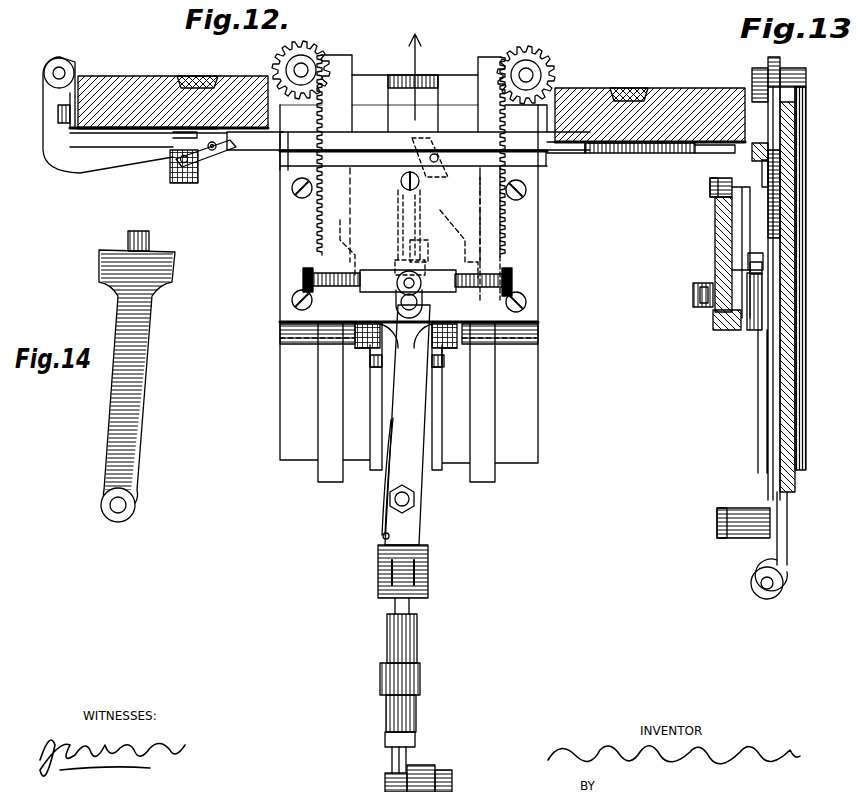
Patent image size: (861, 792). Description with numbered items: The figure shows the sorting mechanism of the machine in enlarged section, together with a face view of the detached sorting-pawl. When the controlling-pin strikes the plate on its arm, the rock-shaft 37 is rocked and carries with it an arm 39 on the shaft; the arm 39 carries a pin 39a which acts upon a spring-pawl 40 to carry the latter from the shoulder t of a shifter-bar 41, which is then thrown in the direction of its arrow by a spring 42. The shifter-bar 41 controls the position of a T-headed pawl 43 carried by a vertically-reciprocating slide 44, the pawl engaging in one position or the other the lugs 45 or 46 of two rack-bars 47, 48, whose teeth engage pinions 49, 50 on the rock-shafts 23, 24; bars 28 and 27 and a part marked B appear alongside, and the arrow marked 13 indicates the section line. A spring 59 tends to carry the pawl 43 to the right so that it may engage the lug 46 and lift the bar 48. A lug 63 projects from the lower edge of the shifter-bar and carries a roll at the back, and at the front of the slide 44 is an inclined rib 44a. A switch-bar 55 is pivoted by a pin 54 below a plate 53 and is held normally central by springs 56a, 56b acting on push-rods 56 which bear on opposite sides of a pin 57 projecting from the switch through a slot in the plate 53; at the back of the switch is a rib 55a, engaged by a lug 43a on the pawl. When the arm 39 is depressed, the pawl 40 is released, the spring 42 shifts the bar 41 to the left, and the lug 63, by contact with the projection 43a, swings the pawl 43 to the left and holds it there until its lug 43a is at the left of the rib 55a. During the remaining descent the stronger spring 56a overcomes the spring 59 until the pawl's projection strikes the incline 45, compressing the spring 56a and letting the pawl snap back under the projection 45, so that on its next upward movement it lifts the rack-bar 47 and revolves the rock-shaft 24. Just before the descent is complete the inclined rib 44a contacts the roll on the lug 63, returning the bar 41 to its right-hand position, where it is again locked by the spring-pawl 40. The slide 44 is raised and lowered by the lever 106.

In FIG. 12, the direction arrow / lead screw 13 is at (415, 73).
In FIG. 12, the rock-shaft 23 is at (541, 75).
In FIG. 12, the rock-shaft 24 is at (220, 67).
In FIG. 12, the right bar 27 is at (636, 88).
In FIG. 12, the left bar 28 is at (196, 76).
In FIG. 12, the rock-shaft 37 is at (55, 59).
In FIG. 12, the arm 39 is at (135, 115).
In FIG. 12, the pin 39a is at (224, 148).
In FIG. 12, the spring-pawl 40 is at (200, 176).
In FIG. 13, the shifter-bar 41 is at (755, 161).
In FIG. 12, the spring 42 is at (618, 171).
In FIG. 12, the T-headed pawl 43 is at (407, 425).
In FIG. 13, the T-headed pawl 43 is at (772, 439).
In FIG. 14, the T-headed pawl 43 is at (138, 401).
In FIG. 12, the lug 43a is at (428, 252).
In FIG. 13, the lug 43a is at (748, 267).
In FIG. 14, the lug 43a is at (128, 240).
In FIG. 12, the slide 44 is at (428, 547).
In FIG. 13, the slide 44 is at (776, 399).
In FIG. 12, the inclined rib 44a is at (396, 202).
In FIG. 13, the inclined rib 44a is at (768, 213).
In FIG. 12, the lug 45 is at (360, 256).
In FIG. 12, the lug 46 is at (460, 246).
In FIG. 12, the rack-bar 47 is at (337, 60).
In FIG. 13, the rack-bar 47 is at (758, 68).
In FIG. 12, the rack-bar 48 is at (486, 58).
In FIG. 12, the pinion 49 is at (301, 62).
In FIG. 13, the pinion 49 is at (782, 60).
In FIG. 12, the pinion 50 is at (540, 62).
In FIG. 12, the plate 53 is at (504, 234).
In FIG. 13, the plate 53 is at (750, 209).
In FIG. 12, the pin 54 is at (421, 183).
In FIG. 13, the pin 54 is at (710, 188).
In FIG. 12, the switch-bar 55 is at (420, 214).
In FIG. 13, the switch-bar 55 is at (755, 239).
In FIG. 12, the rib 55a is at (404, 238).
In FIG. 13, the rib 55a is at (746, 253).
In FIG. 12, the push-rods 56 is at (455, 292).
In FIG. 12, the spring 56a is at (498, 278).
In FIG. 12, the spring 56b is at (318, 275).
In FIG. 12, the pin 57 is at (421, 277).
In FIG. 13, the pin 57 is at (700, 285).
In FIG. 12, the spring 59 is at (388, 472).
In FIG. 12, the lug 63 is at (438, 152).
In FIG. 13, the lug 63 is at (770, 145).
In FIG. 12, the lever 106 is at (433, 769).
In FIG. 12, the bar B is at (695, 88).
In FIG. 12, the shoulder t is at (236, 142).